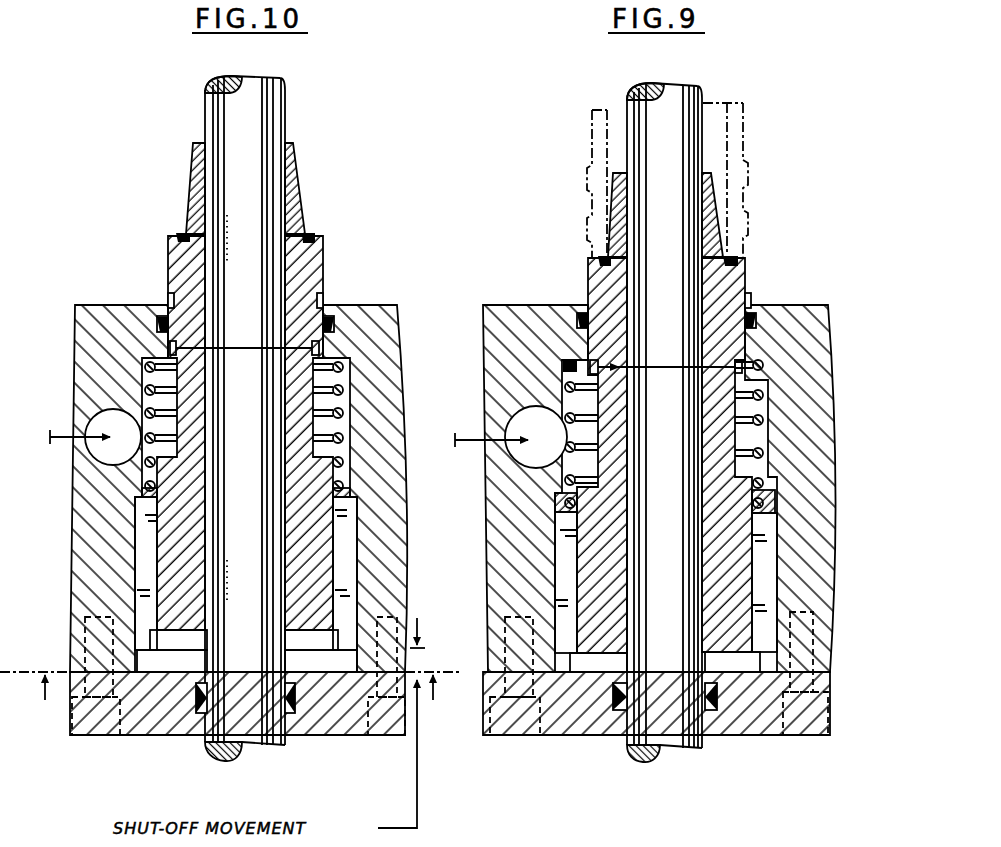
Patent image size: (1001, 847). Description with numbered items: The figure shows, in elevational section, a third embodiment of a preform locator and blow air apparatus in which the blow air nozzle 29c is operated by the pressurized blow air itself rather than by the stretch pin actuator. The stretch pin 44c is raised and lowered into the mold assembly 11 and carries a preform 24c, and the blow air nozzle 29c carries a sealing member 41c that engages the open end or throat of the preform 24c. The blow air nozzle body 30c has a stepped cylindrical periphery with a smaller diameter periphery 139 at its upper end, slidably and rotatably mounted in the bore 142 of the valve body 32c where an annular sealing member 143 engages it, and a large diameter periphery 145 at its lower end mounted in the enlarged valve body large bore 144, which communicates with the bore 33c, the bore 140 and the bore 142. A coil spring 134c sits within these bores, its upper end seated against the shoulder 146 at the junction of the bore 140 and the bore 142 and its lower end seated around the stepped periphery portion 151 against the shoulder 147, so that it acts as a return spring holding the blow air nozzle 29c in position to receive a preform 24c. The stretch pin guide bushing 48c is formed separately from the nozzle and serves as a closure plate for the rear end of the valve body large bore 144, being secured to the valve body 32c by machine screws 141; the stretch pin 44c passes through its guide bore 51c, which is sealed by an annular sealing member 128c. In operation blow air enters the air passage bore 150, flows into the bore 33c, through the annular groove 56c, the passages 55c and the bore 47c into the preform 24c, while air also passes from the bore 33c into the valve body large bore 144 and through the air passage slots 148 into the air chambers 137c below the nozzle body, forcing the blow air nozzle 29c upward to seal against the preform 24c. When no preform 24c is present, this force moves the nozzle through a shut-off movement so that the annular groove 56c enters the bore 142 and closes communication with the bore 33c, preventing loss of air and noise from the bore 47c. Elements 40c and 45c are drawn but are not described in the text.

In FIG. 10, the stretch pin 44c is at (290, 116).
In FIG. 9, the stretch pin 44c is at (708, 136).
In FIG. 10, the bore 47c is at (213, 183).
In FIG. 9, the bore 47c is at (705, 170).
In FIG. 10, the collar 40c is at (297, 172).
In FIG. 9, the collar 40c is at (613, 206).
In FIG. 10, the preform 24c is at (338, 180).
In FIG. 9, the preform 24c is at (762, 187).
In FIG. 10, the sealing member 41c is at (306, 238).
In FIG. 9, the sealing member 41c is at (735, 258).
In FIG. 10, the blow air nozzle 29c is at (328, 252).
In FIG. 9, the blow air nozzle 29c is at (755, 275).
In FIG. 10, the blow air nozzle body 30c is at (285, 420).
In FIG. 9, the blow air nozzle body 30c is at (737, 350).
In FIG. 10, the valve body 32c is at (355, 312).
In FIG. 9, the valve body 32c is at (818, 315).
In FIG. 10, the bore 33c is at (347, 403).
In FIG. 9, the bore 33c is at (770, 405).
In FIG. 10, the bore 142 is at (168, 300).
In FIG. 9, the bore 142 is at (748, 301).
In FIG. 10, the annular sealing member 143 is at (327, 322).
In FIG. 9, the annular sealing member 143 is at (582, 315).
In FIG. 10, the annular groove 56c is at (320, 350).
In FIG. 9, the annular groove 56c is at (760, 366).
In FIG. 10, the passages 55c is at (196, 349).
In FIG. 9, the passages 55c is at (615, 368).
In FIG. 10, the coil spring 134c is at (147, 383).
In FIG. 9, the coil spring 134c is at (765, 452).
In FIG. 10, the shoulder 146 is at (152, 392).
In FIG. 9, the shoulder 146 is at (562, 368).
In FIG. 10, the shoulder 147 is at (345, 488).
In FIG. 9, the shoulder 147 is at (562, 512).
In FIG. 10, the rod bore 45c is at (207, 480).
In FIG. 9, the rod bore 45c is at (628, 548).
In FIG. 10, the air passage bore 150 is at (100, 465).
In FIG. 9, the air passage bore 150 is at (496, 452).
In FIG. 10, the valve body large bore 144 is at (145, 540).
In FIG. 9, the valve body large bore 144 is at (778, 498).
In FIG. 10, the large diameter periphery 145 is at (357, 547).
In FIG. 9, the large diameter periphery 145 is at (560, 540).
In FIG. 10, the air passage slots 148 is at (137, 583).
In FIG. 9, the air passage slots 148 is at (767, 567).
In FIG. 10, the mold assembly 11 is at (234, 687).
In FIG. 10, the air chambers 137c is at (177, 658).
In FIG. 9, the air chambers 137c is at (588, 660).
In FIG. 10, the machine screws 141 is at (100, 738).
In FIG. 9, the machine screws 141 is at (517, 740).
In FIG. 10, the annular sealing member 128c is at (198, 706).
In FIG. 9, the annular sealing member 128c is at (600, 702).
In FIG. 10, the guide bore 51c is at (275, 746).
In FIG. 9, the guide bore 51c is at (692, 750).
In FIG. 10, the stretch pin guide bushing 48c is at (328, 718).
In FIG. 9, the stretch pin guide bushing 48c is at (724, 722).
In FIG. 9, the bore 140 is at (520, 300).
In FIG. 9, the smaller diameter periphery 139 is at (750, 345).
In FIG. 9, the stepped periphery portion 151 is at (481, 538).